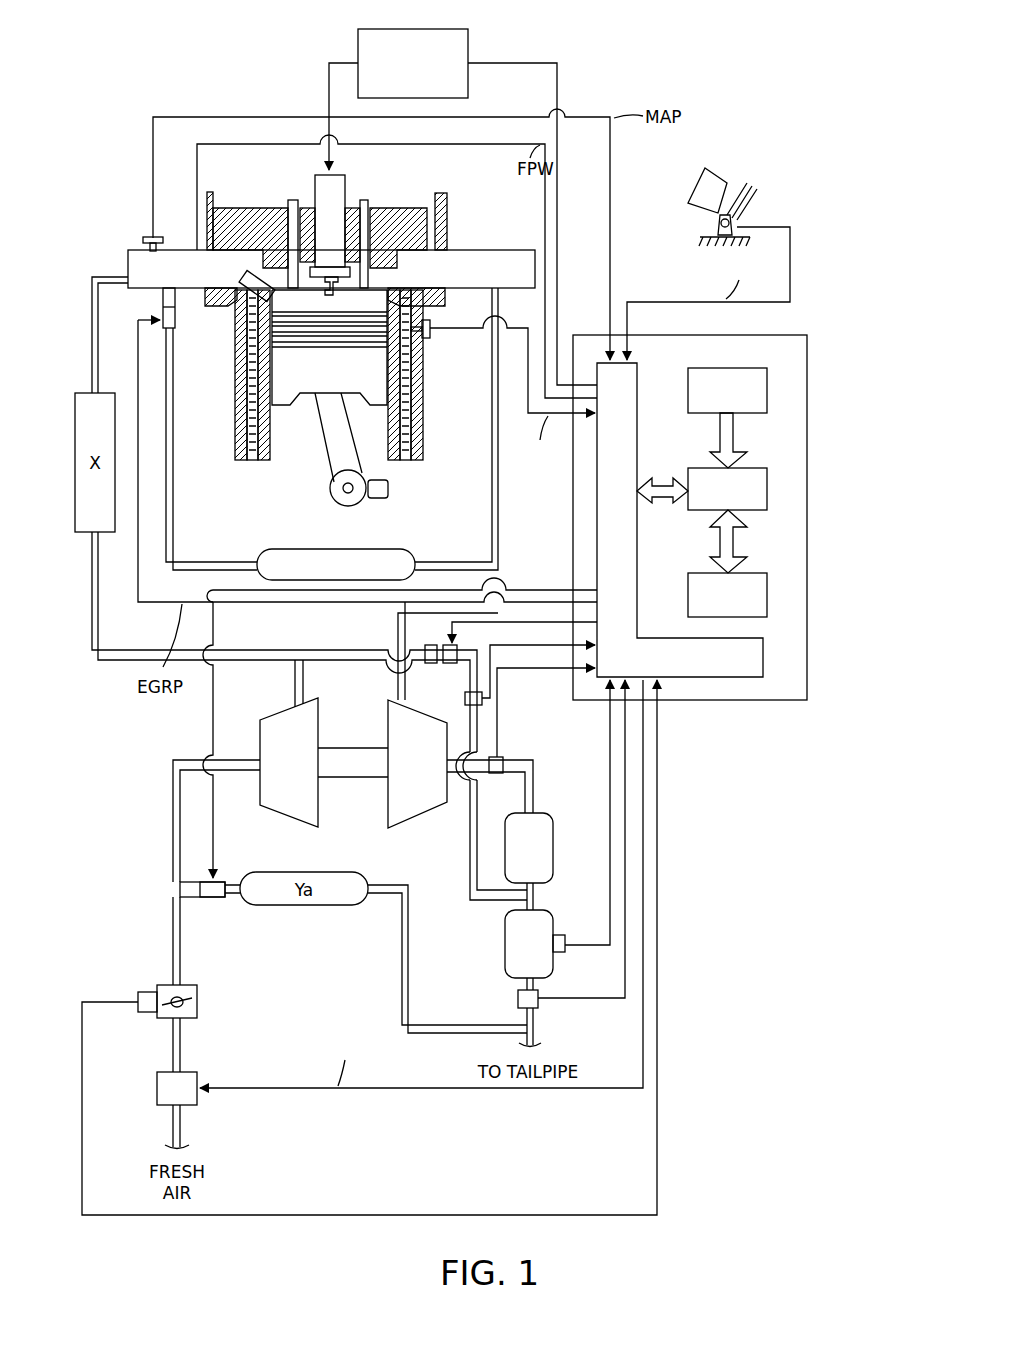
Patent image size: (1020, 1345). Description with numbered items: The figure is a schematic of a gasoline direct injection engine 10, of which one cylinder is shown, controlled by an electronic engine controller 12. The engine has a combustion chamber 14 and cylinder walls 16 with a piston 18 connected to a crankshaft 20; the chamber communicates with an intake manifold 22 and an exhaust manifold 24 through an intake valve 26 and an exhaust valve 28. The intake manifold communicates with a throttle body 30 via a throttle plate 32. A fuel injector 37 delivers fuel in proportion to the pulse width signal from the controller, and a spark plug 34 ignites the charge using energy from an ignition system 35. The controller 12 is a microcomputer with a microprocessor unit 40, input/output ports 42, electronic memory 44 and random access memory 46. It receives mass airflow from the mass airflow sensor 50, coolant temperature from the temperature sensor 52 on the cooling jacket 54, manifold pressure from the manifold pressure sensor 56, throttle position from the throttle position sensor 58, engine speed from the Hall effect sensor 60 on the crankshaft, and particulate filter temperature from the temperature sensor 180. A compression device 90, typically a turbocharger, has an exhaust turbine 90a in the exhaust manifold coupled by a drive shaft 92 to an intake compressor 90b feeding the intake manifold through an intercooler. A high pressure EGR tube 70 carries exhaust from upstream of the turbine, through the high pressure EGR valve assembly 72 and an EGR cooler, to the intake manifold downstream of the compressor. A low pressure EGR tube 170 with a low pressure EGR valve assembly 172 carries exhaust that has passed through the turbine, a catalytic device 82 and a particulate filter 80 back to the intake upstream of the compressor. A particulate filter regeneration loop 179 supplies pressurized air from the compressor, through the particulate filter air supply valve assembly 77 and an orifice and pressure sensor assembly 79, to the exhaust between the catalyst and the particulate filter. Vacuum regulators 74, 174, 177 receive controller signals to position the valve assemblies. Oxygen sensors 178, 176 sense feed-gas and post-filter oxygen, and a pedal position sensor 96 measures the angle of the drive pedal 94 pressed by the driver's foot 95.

The internal combustion engine 10 is at (241, 481).
The electronic engine controller 12 is at (708, 491).
The combustion chamber 14 is at (300, 302).
The cylinder walls 16 is at (271, 455).
The piston 18 is at (312, 394).
The crankshaft 20 is at (339, 500).
The intake manifold 22 is at (362, 266).
The exhaust manifold 24 is at (463, 272).
The intake valve 26 is at (288, 201).
The exhaust valve 28 is at (369, 201).
The throttle body 30 is at (198, 993).
The throttle plate 32 is at (168, 1001).
The spark plug 34 is at (322, 185).
The ignition system 35 is at (470, 33).
The fuel injector 37 is at (256, 278).
The microprocessor unit 40 is at (757, 465).
The input/output ports 42 is at (639, 370).
The electronic memory 44 is at (769, 389).
The random access memory 46 is at (757, 570).
The mass airflow sensor 50 is at (198, 1077).
The temperature sensor 52 is at (432, 336).
The cooling jacket 54 is at (412, 415).
The manifold pressure sensor 56 is at (142, 239).
The throttle position sensor 58 is at (148, 1013).
The Hall effect sensor 60 is at (378, 499).
The high pressure EGR tube 70 is at (203, 562).
The high pressure EGR valve assembly 72 is at (172, 297).
The vacuum regulator 74 is at (162, 310).
The particulate filter air supply valve assembly 77 is at (452, 665).
The orifice and pressure sensor assembly 79 is at (483, 702).
The particulate filter 80 is at (529, 944).
The catalytic device 82 is at (529, 848).
The compression device 90 is at (286, 763).
The exhaust turbine 90a is at (417, 764).
The intake compressor 90b is at (289, 762).
The drive shaft 92 is at (346, 748).
The drive pedal 94 is at (754, 192).
The driver's foot 95 is at (699, 192).
The pedal position sensor 96 is at (713, 226).
The low pressure EGR tube 170 is at (400, 950).
The low pressure EGR valve assembly 172 is at (210, 898).
The vacuum regulator 174 is at (187, 890).
The oxygen sensor 176 is at (539, 1001).
The vacuum regulator 177 is at (430, 645).
The oxygen sensor 178 is at (504, 758).
The particulate filter regeneration loop 179 is at (470, 890).
The temperature sensor 180 is at (559, 934).